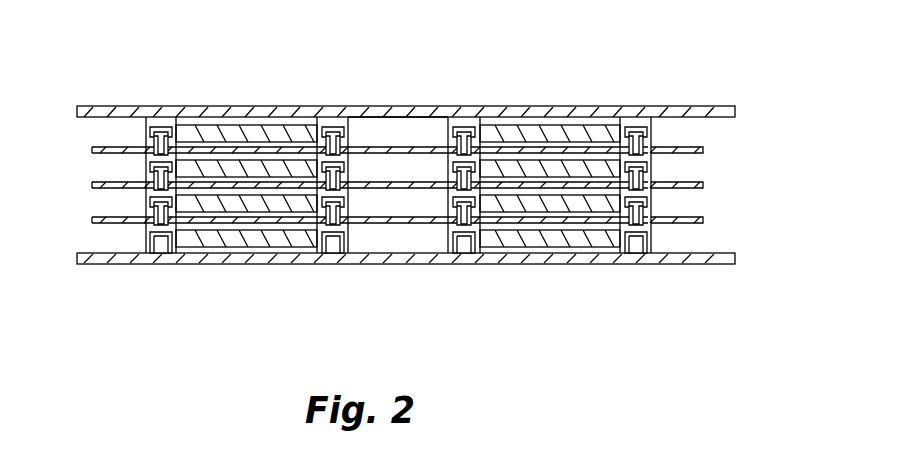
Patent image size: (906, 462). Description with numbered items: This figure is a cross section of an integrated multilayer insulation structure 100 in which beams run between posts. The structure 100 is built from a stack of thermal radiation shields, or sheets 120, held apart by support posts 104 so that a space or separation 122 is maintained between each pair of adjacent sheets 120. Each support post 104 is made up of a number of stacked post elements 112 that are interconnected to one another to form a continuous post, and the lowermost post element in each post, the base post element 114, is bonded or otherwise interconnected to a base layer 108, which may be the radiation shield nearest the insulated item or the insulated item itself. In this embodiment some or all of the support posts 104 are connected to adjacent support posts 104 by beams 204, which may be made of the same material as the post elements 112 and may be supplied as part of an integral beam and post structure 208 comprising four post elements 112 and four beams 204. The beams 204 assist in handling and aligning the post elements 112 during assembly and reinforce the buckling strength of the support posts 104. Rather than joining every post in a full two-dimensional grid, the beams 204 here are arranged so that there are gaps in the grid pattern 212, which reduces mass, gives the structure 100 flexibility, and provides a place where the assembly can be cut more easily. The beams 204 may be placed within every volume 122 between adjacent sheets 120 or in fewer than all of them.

The integrated multilayer insulation structure 100 is at (687, 77).
The support post 104 is at (167, 125).
The base layer 108 is at (740, 263).
The post element 112 is at (146, 128).
The base post element 114 is at (652, 238).
The thermal radiation shield 120 is at (705, 150).
The separation 122 is at (118, 165).
The beam 204 is at (247, 133).
The integral beam and post structure 208 is at (146, 240).
The gap in the grid pattern 212 is at (380, 125).